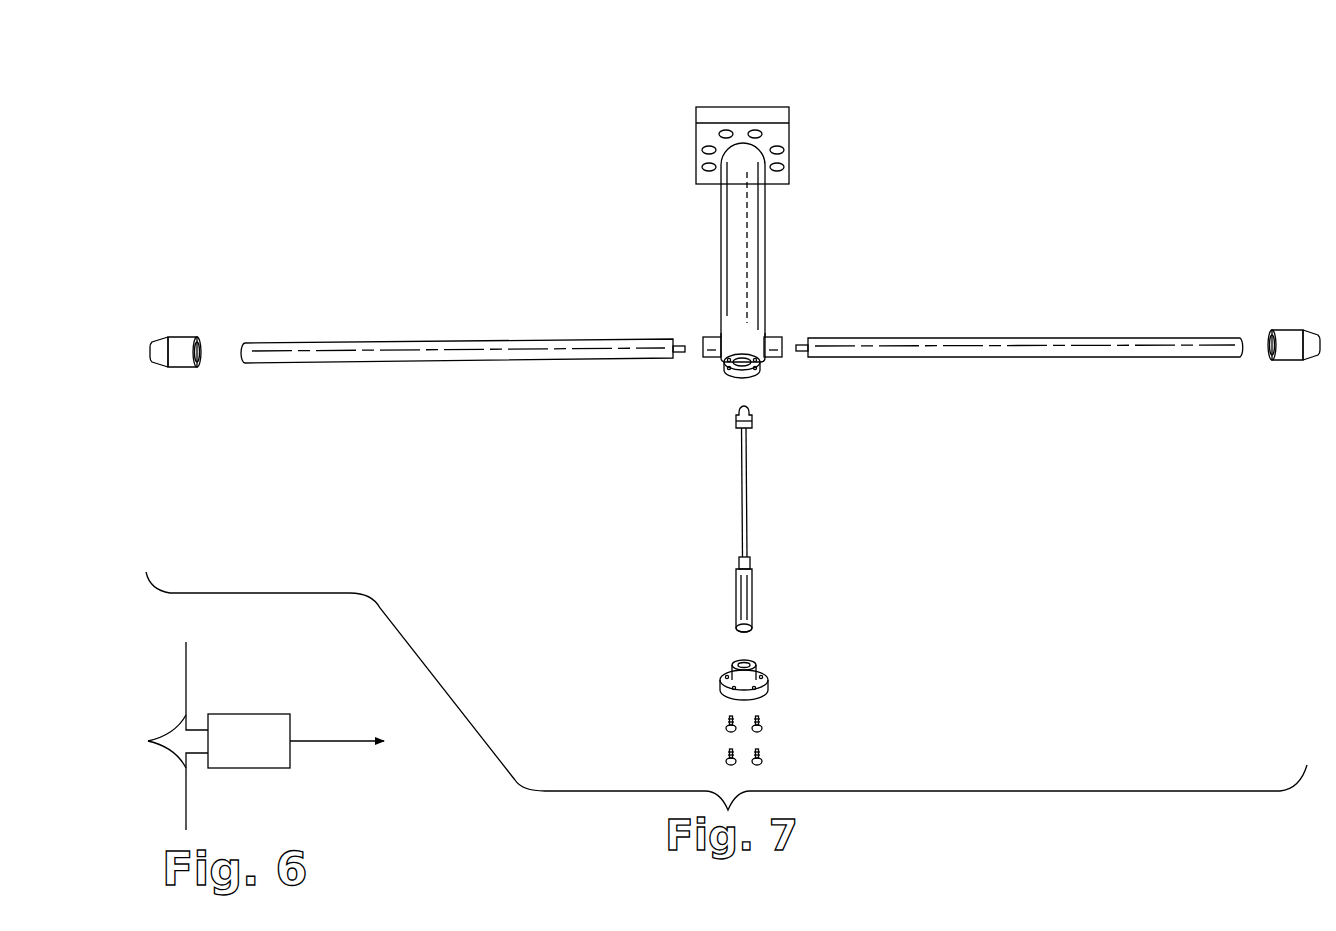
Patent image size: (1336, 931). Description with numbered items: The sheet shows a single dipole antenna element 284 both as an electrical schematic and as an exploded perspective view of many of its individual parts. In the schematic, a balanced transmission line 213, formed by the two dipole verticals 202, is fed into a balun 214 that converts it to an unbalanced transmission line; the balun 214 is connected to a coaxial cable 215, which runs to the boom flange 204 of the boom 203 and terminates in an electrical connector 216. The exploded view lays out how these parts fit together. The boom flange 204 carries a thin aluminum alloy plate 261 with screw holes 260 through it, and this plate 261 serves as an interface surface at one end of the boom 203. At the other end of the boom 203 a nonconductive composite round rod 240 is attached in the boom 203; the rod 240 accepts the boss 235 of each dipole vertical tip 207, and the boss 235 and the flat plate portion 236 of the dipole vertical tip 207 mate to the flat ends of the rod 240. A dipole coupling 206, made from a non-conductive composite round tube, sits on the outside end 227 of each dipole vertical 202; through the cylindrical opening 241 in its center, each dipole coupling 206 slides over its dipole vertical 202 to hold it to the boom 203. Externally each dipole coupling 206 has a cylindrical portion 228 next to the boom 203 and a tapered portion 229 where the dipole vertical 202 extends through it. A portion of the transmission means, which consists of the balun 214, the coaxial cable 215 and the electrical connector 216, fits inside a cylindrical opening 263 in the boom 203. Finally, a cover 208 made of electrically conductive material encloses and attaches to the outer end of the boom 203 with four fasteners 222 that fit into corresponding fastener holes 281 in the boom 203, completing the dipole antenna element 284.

In FIG. 7, the dipole vertical 202 is at (476, 340).
In FIG. 7, the boom 203 is at (745, 223).
In FIG. 7, the boom flange 204 is at (725, 118).
In FIG. 7, the dipole coupling 206 is at (180, 331).
In FIG. 7, the dipole vertical tip 207 is at (658, 324).
In FIG. 7, the cover 208 is at (722, 676).
In FIG. 6, the balanced transmission line 213 is at (148, 741).
In FIG. 6, the balun 214 is at (232, 752).
In FIG. 7, the balun 214 is at (735, 600).
In FIG. 6, the coaxial cable 215 is at (312, 741).
In FIG. 7, the coaxial cable 215 is at (748, 485).
In FIG. 6, the electrical connector 216 is at (388, 741).
In FIG. 7, the electrical connector 216 is at (737, 412).
In FIG. 7, the fasteners 222 is at (726, 732).
In FIG. 7, the outside end 227 is at (237, 349).
In FIG. 7, the cylindrical portion 228 is at (182, 366).
In FIG. 7, the tapered portion 229 is at (152, 343).
In FIG. 7, the boss 235 is at (676, 340).
In FIG. 7, the flat plate portion 236 is at (677, 358).
In FIG. 7, the nonconductive composite round rod 240 is at (703, 345).
In FIG. 7, the cylindrical opening 241 is at (203, 357).
In FIG. 7, the screw holes 260 is at (762, 134).
In FIG. 7, the thin aluminum alloy plate 261 is at (752, 105).
In FIG. 7, the cylindrical opening 263 is at (745, 376).
In FIG. 7, the fastener holes 281 is at (756, 366).
In FIG. 7, the dipole antenna element 284 is at (1002, 166).